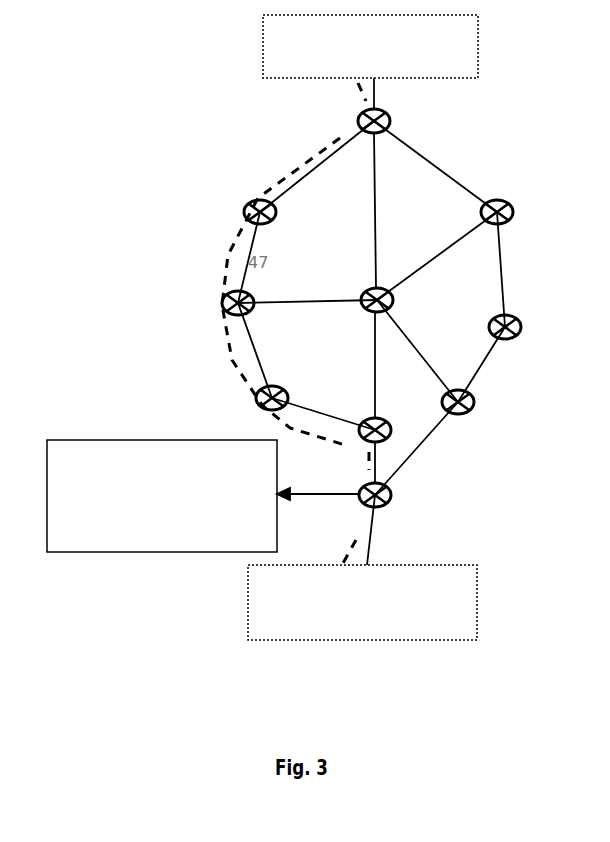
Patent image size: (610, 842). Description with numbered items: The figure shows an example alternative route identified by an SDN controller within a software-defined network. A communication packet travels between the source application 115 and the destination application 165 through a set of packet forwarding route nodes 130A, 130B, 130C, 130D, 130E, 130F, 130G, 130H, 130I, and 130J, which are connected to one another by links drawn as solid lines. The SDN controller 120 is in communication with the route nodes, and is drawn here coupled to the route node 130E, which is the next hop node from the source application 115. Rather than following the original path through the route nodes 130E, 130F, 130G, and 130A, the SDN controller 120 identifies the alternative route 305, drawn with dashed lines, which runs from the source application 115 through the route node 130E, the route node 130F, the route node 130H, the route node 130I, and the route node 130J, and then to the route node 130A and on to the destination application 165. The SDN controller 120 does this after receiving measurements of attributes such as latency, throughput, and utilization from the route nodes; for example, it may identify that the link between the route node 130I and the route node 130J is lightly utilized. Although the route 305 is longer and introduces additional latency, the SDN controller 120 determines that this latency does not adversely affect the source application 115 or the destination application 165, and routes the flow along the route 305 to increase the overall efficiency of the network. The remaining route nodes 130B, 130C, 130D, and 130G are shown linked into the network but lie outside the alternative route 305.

The destination application 165 is at (440, 74).
The SDN controller 120 is at (144, 525).
The source application 115 is at (346, 630).
The route 305 is at (333, 136).
The route node 130A is at (399, 121).
The route node 130B is at (508, 197).
The route node 130C is at (527, 315).
The route node 130D is at (483, 410).
The route node 130E is at (399, 504).
The route node 130F is at (360, 414).
The route node 130G is at (405, 302).
The route node 130H is at (250, 408).
The route node 130I is at (218, 291).
The route node 130J is at (233, 209).